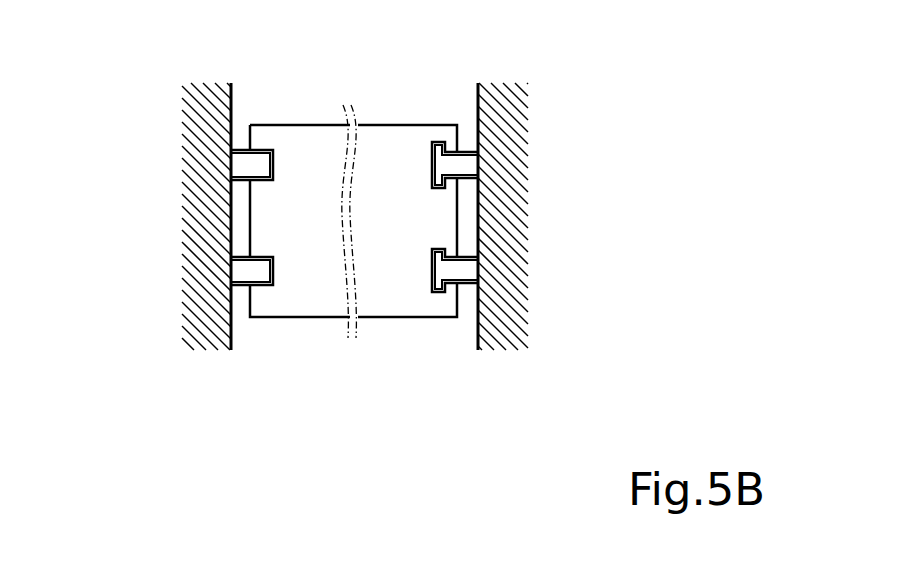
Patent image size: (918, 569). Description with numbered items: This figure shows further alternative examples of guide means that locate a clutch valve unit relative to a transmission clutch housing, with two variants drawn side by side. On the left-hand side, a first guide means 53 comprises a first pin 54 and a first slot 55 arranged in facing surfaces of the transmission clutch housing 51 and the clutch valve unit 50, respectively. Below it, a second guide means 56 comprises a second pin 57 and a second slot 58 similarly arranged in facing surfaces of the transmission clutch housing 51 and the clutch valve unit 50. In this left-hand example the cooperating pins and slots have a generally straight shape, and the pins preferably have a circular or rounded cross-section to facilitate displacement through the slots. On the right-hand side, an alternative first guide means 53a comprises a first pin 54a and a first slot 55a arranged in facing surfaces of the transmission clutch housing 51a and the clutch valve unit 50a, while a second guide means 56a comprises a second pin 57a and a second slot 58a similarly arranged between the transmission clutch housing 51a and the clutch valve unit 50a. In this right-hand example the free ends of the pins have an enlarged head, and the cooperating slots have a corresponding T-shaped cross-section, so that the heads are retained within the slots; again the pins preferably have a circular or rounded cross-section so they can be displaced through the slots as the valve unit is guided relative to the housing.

The clutch valve unit 50 is at (285, 302).
The clutch valve unit 50a is at (395, 295).
The transmission clutch housing 51 is at (231, 103).
The transmission clutch housing 51a is at (478, 107).
The first guide means 53 is at (153, 208).
The first guide means 53a is at (542, 178).
The first pin 54 is at (253, 167).
The first pin 54a is at (463, 167).
The first slot 55 is at (273, 165).
The first slot 55a is at (432, 152).
The second guide means 56 is at (150, 262).
The second guide means 56a is at (538, 227).
The second pin 57 is at (242, 272).
The second pin 57a is at (463, 270).
The second slot 58 is at (273, 272).
The second slot 58a is at (430, 288).